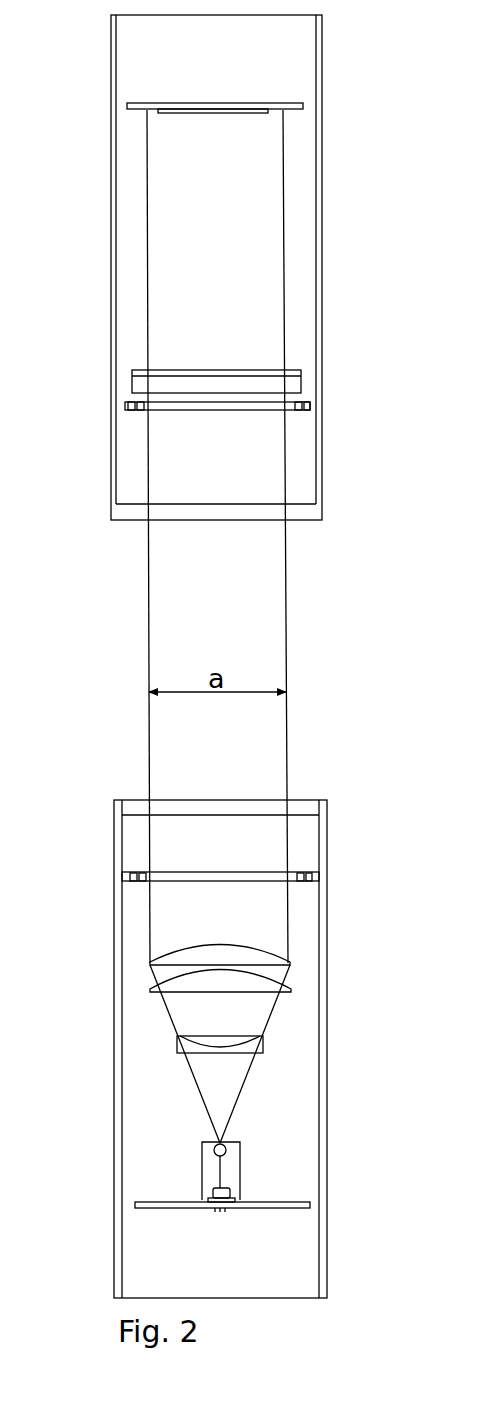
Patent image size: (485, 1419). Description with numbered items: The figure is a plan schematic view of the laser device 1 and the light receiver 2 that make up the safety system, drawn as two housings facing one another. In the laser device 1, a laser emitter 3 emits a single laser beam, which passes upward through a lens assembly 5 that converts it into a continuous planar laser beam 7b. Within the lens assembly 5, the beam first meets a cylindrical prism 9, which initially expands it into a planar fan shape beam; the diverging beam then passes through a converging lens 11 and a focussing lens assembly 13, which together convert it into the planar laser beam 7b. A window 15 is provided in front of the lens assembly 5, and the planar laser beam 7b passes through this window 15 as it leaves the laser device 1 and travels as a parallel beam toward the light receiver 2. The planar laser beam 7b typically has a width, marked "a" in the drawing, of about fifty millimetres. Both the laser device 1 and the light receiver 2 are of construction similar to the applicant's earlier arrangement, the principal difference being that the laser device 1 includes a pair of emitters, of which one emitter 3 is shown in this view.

The laser device 1 is at (116, 1245).
The light receiver 2 is at (110, 272).
The laser emitter 3 is at (247, 1198).
The lens assembly 5 is at (230, 1079).
The planar laser beam 7b is at (210, 589).
The cylindrical prism 9 is at (242, 1150).
The converging lens 11 is at (270, 1036).
The focussing lens assembly 13 is at (298, 950).
The window 15 is at (322, 878).